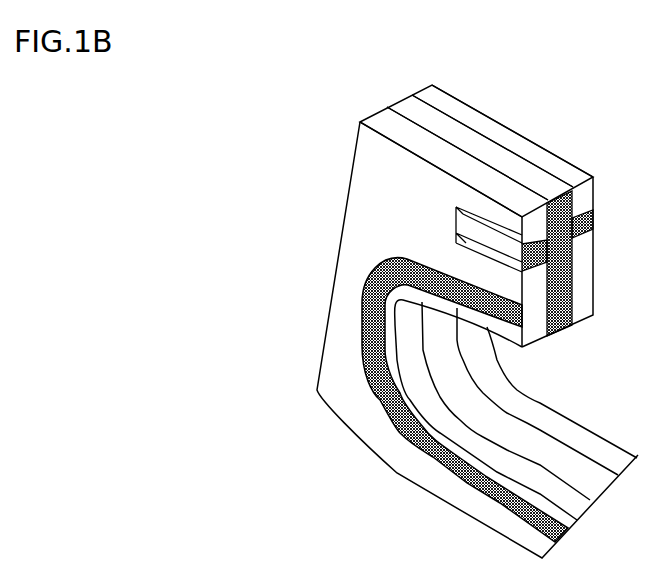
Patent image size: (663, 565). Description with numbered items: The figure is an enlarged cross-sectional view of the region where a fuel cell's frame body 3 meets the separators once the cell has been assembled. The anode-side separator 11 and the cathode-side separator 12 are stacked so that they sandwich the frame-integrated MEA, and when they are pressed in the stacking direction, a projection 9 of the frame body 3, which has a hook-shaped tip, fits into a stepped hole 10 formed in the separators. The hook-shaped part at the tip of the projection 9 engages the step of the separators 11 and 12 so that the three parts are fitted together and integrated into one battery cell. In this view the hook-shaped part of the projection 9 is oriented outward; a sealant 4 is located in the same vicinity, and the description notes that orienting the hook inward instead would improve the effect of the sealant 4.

The frame body 3 is at (407, 110).
The sealant 4 is at (360, 323).
The projection 9 is at (580, 218).
The stepped hole 10 is at (470, 242).
The anode-side separator 11 is at (430, 95).
The cathode-side separator 12 is at (387, 123).